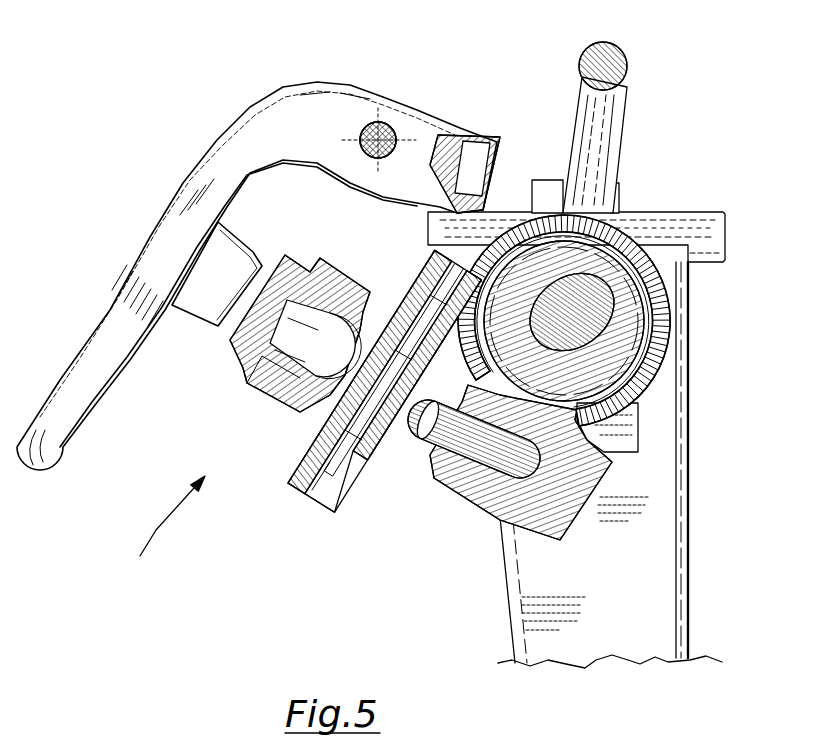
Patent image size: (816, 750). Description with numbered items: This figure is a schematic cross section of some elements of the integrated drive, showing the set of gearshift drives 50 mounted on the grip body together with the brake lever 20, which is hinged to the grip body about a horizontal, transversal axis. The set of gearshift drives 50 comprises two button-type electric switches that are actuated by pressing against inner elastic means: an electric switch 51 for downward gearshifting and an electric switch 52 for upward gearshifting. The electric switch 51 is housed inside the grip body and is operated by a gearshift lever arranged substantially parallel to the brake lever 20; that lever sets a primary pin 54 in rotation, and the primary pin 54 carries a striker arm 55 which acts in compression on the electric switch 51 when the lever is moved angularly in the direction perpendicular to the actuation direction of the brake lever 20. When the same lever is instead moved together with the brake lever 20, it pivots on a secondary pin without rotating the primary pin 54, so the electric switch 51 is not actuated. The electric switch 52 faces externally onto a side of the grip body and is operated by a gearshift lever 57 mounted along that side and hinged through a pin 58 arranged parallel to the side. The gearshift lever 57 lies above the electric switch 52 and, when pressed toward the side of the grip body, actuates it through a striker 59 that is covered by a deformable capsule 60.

The brake lever 20 is at (657, 553).
The set of gearshift drives 50 is at (156, 528).
The electric switch 51 is at (378, 470).
The electric switch 52 is at (316, 428).
The primary pin 54 is at (668, 336).
The striker arm 55 is at (458, 452).
The gearshift lever 57 is at (97, 327).
The pin 58 is at (382, 122).
The striker 59 is at (267, 398).
The deformable capsule 60 is at (232, 350).